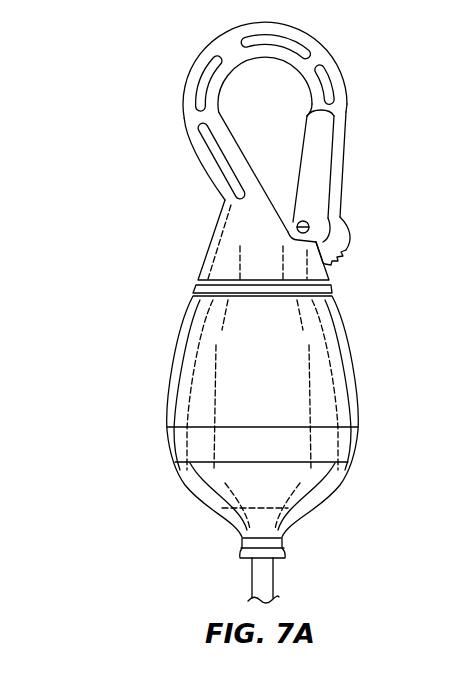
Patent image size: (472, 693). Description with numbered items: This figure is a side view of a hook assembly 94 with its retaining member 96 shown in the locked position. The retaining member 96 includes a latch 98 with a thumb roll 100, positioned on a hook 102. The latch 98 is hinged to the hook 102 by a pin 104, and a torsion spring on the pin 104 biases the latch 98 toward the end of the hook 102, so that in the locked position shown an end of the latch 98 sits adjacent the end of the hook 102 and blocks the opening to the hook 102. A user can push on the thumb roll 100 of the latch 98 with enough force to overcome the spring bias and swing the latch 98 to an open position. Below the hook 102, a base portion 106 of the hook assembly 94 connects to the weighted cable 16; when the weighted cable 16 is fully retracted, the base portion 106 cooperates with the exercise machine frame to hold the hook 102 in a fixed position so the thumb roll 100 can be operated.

The hook assembly 94 is at (142, 103).
The hook 102 is at (322, 48).
The latch 98 is at (327, 137).
The retaining member 96 is at (345, 168).
The thumb roll 100 is at (340, 258).
The pin 104 is at (287, 232).
The base portion 106 is at (323, 393).
The weighted cable 16 is at (272, 575).